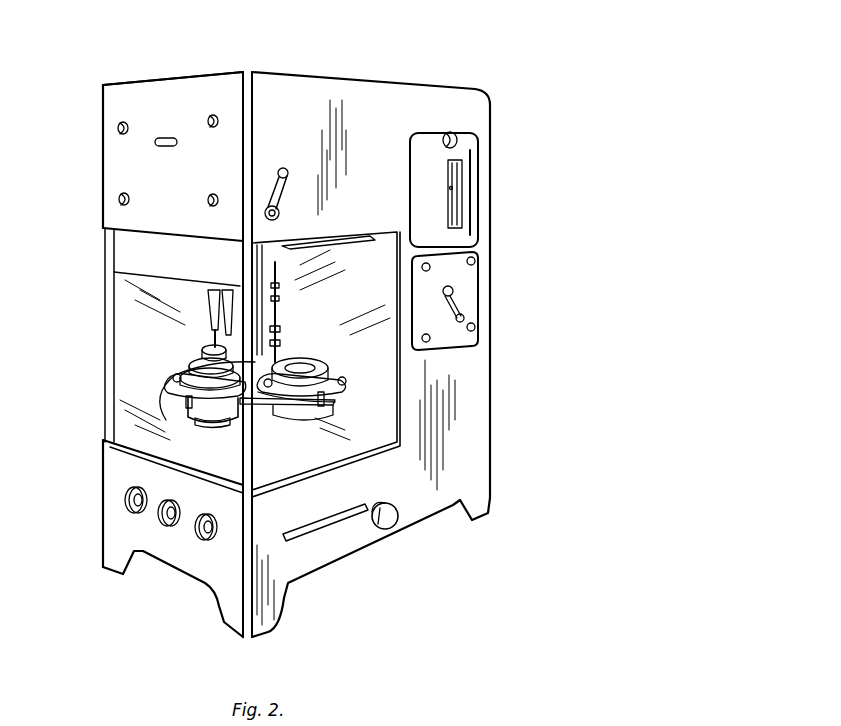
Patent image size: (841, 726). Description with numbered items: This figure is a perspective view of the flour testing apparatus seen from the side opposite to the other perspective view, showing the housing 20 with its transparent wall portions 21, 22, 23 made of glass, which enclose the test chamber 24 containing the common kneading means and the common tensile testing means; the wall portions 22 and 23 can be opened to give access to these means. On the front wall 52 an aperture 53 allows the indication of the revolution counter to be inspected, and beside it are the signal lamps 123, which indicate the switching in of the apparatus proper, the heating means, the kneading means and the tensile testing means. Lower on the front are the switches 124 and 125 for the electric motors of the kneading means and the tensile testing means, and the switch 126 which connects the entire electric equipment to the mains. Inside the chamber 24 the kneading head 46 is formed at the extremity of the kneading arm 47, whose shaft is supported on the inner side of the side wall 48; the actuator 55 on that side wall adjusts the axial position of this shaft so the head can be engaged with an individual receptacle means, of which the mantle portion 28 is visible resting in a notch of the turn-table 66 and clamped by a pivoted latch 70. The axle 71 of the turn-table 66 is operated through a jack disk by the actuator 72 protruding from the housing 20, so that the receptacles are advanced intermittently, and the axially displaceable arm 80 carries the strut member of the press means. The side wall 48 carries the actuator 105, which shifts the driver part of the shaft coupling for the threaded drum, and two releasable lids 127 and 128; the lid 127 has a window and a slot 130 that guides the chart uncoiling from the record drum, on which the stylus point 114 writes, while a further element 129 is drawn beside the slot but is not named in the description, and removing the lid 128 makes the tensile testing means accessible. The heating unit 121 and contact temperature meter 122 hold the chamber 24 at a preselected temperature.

The housing 20 is at (360, 82).
The side wall 48 is at (390, 120).
The front wall 52 is at (195, 98).
The aperture 53 is at (163, 135).
The signal lamps 123 is at (116, 132).
The actuator 55 is at (289, 165).
The lid 127 is at (462, 140).
The slot 130 is at (476, 160).
The point of the stylus 114 is at (453, 188).
The scale 129 is at (466, 225).
The actuator 105 is at (463, 300).
The lid 128 is at (452, 330).
The wall portion 23 is at (392, 446).
The heating unit 121 is at (342, 242).
The test chamber 24 is at (130, 322).
The wall portion 22 is at (140, 456).
The contact temperature meter 122 is at (279, 312).
The axle 71 is at (281, 341).
The kneading arm 47 is at (207, 298).
The arm 80 is at (222, 327).
The kneading head 46 is at (175, 372).
The wall portion 21 is at (158, 427).
The mantle portion 28 is at (205, 410).
The turn-table 66 is at (255, 405).
The latch 70 is at (322, 392).
The switch 124 is at (130, 515).
The switch 125 is at (166, 530).
The switch 126 is at (203, 545).
The actuator 72 is at (392, 530).